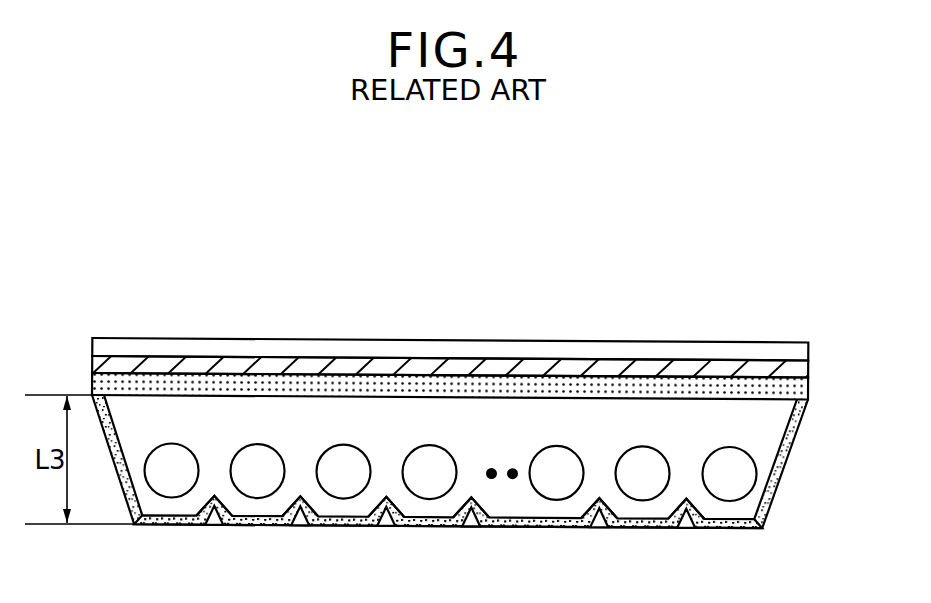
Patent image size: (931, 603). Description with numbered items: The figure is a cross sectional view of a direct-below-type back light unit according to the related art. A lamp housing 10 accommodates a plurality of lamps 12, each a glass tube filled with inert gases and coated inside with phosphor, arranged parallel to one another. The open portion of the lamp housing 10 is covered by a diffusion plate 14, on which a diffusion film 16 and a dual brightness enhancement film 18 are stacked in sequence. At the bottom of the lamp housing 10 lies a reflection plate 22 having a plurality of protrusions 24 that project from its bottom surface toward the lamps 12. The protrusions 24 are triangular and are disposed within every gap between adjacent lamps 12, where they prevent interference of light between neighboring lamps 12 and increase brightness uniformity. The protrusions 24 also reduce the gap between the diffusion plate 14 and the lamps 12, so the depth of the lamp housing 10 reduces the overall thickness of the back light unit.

The lamp housing 10 is at (790, 457).
The lamps 12 is at (745, 490).
The diffusion plate 14 is at (793, 390).
The diffusion film 16 is at (793, 370).
The dual brightness enhancement film 18 is at (793, 350).
The reflection plate 22 is at (760, 523).
The protrusions 24 is at (685, 525).